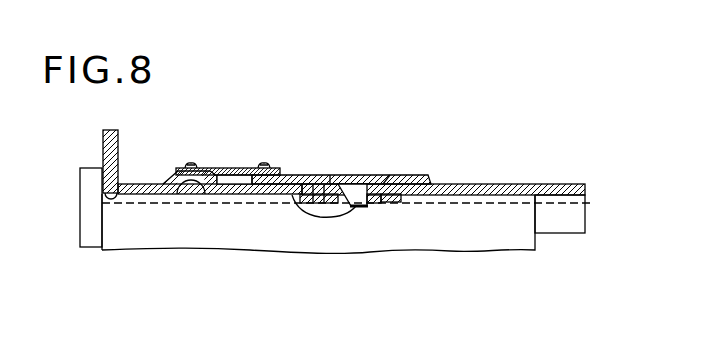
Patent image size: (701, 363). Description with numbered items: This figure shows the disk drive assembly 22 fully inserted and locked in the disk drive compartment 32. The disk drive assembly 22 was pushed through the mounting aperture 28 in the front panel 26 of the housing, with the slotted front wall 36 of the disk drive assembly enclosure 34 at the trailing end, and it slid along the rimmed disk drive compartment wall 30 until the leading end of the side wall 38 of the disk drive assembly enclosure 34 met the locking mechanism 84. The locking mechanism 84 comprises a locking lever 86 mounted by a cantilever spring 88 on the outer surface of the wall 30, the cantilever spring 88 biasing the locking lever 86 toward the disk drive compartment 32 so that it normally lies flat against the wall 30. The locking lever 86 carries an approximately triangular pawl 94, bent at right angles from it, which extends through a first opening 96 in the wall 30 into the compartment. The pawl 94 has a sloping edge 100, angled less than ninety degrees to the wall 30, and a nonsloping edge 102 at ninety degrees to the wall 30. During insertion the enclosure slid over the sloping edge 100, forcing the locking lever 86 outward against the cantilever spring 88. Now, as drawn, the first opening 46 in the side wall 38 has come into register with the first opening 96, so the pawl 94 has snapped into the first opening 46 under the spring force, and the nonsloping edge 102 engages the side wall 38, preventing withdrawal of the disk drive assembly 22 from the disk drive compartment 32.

The disk drive assembly 22 is at (78, 217).
The front panel 26 is at (103, 146).
The mounting aperture 28 is at (118, 192).
The disk drive compartment wall 30 is at (532, 183).
The disk drive compartment 32 is at (572, 197).
The disk drive assembly enclosure 34 is at (464, 256).
The slotted front wall 36 is at (80, 186).
The side wall 38 is at (389, 204).
The first opening 46 is at (331, 206).
The locking mechanism 84 is at (401, 167).
The locking lever 86 is at (421, 176).
The cantilever spring 88 is at (219, 167).
The pawl 94 is at (356, 178).
The first opening 96 is at (324, 181).
The sloping edge 100 is at (339, 210).
The nonsloping edge 102 is at (381, 208).